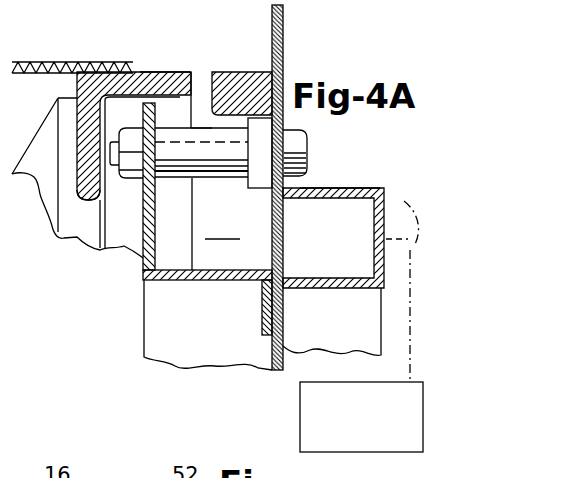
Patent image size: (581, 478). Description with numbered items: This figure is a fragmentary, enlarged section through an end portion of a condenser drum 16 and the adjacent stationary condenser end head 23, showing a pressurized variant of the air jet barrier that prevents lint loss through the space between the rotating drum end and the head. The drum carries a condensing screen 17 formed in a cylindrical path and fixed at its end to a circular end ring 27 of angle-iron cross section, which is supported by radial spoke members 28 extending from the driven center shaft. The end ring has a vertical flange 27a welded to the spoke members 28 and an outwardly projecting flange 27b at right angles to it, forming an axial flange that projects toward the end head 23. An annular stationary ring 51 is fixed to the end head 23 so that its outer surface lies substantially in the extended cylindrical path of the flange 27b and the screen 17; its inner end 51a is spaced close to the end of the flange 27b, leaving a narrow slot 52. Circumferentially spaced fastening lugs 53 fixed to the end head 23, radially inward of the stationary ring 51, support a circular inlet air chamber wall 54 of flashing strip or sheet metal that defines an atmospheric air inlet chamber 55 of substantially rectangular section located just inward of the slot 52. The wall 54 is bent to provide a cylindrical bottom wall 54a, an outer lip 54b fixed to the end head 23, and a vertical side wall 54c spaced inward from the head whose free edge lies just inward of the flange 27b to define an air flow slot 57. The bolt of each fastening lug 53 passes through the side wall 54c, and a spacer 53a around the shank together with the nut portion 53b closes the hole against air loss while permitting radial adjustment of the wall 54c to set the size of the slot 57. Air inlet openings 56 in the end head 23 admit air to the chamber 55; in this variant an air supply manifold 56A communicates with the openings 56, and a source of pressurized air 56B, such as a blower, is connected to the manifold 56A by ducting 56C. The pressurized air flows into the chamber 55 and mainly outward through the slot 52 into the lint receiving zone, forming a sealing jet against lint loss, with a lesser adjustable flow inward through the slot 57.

The condenser drum 16 is at (49, 56).
The condensing screen 17 is at (89, 62).
The condenser end head 23 is at (284, 323).
The circular end ring 27 is at (136, 61).
The vertical flange 27a is at (80, 207).
The outwardly projecting flange 27b is at (150, 71).
The radial spoke member 28 is at (52, 214).
The stationary ring 51 is at (251, 72).
The inner end of stationary ring 51a is at (212, 70).
The slot 52 is at (200, 98).
The fastening lug 53 is at (304, 149).
The spacer 53a is at (214, 178).
The nut portion 53b is at (137, 182).
The inlet air chamber wall 54 is at (143, 290).
The cylindrical bottom wall 54a is at (206, 282).
The outer lip 54b is at (263, 329).
The vertical side wall 54c is at (143, 262).
The atmospheric air inlet chamber 55 is at (314, 244).
The air inlet opening 56 is at (278, 231).
The air supply manifold 56A is at (356, 188).
The source of pressurized air 56B is at (300, 409).
The ducting 56C is at (406, 281).
The air flow slot 57 is at (170, 103).